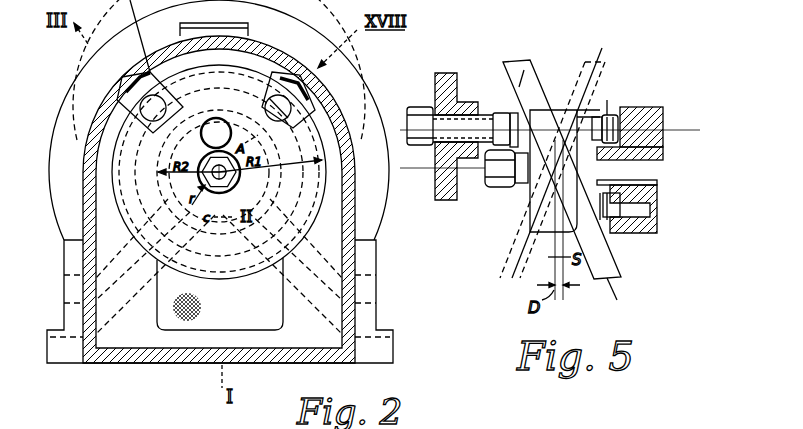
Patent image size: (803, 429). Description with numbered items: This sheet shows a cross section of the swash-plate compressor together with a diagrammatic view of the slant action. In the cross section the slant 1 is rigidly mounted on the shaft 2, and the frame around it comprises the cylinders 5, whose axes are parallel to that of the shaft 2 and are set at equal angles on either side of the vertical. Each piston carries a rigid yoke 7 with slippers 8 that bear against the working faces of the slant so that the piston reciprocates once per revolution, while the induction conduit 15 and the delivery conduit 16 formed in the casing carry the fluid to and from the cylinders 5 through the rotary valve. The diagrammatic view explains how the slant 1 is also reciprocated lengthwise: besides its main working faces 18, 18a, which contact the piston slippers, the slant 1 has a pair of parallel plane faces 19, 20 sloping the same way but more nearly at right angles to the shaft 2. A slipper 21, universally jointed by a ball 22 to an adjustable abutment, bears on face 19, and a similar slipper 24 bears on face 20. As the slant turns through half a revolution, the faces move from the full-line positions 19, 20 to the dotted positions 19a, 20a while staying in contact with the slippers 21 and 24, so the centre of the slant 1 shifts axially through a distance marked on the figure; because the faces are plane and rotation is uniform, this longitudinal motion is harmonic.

In FIG. 2, the slant 1 is at (219, 137).
In FIG. 5, the slant 1 is at (519, 78).
In FIG. 2, the shaft 2 is at (332, 30).
In FIG. 2, the cylinder 5 is at (262, 106).
In FIG. 5, the cylinder 5 is at (551, 257).
In FIG. 2, the yoke 7 is at (312, 96).
In FIG. 2, the slipper 8 is at (220, 104).
In FIG. 2, the induction conduit 15 is at (155, 266).
In FIG. 2, the delivery conduit 16 is at (282, 266).
In FIG. 2, the working face 18 is at (219, 172).
In FIG. 5, the working face 18 is at (502, 65).
In FIG. 5, the working face 18a is at (536, 61).
In FIG. 2, the working face 19 is at (219, 172).
In FIG. 5, the working face 19 is at (530, 226).
In FIG. 5, the working face in shifted position 19a is at (517, 210).
In FIG. 5, the working face 20 is at (594, 168).
In FIG. 5, the working face in shifted position 20a is at (627, 180).
In FIG. 2, the slipper 21 is at (219, 139).
In FIG. 5, the slipper 21 is at (509, 112).
In FIG. 2, the ball 22 is at (216, 133).
In FIG. 5, the slipper 24 is at (607, 112).